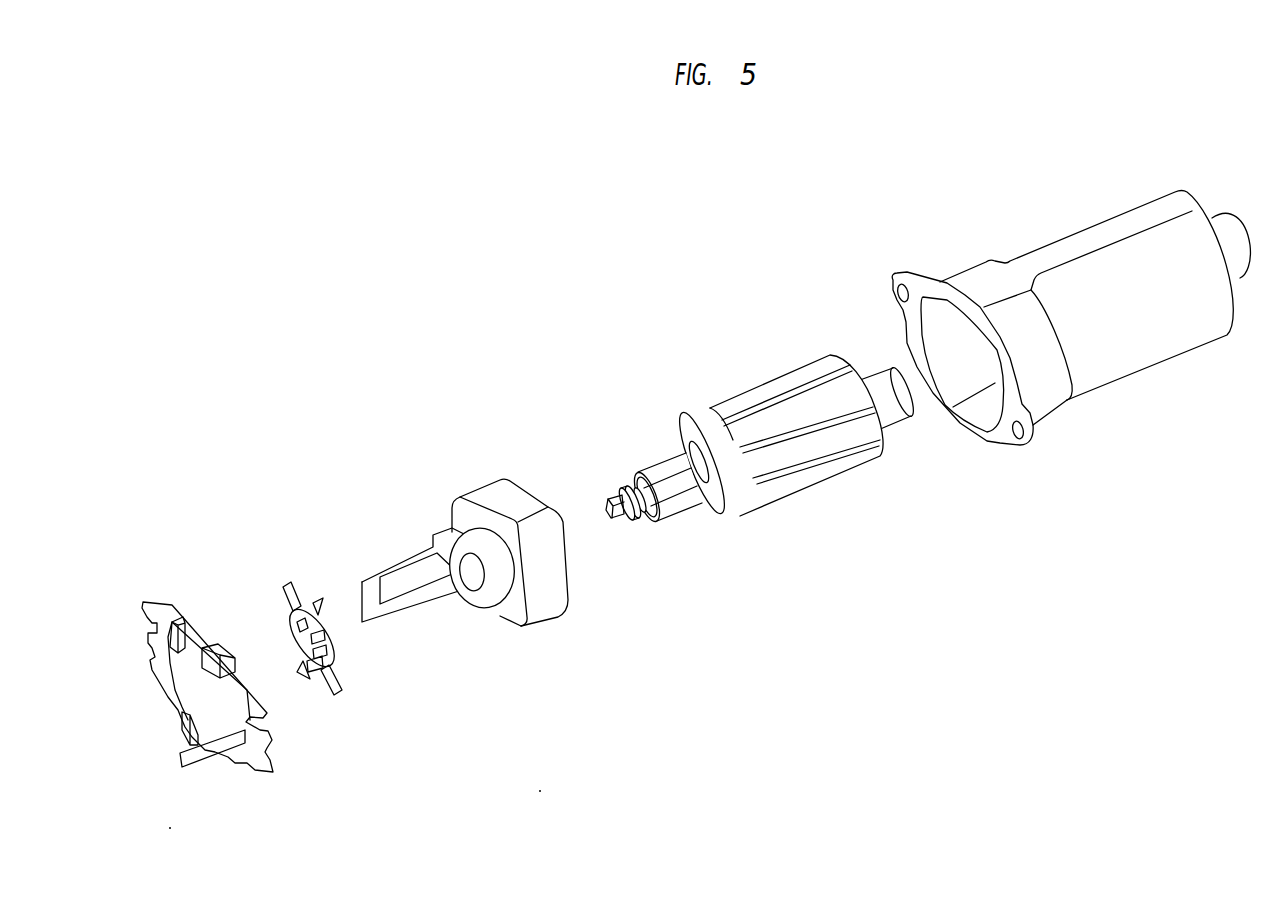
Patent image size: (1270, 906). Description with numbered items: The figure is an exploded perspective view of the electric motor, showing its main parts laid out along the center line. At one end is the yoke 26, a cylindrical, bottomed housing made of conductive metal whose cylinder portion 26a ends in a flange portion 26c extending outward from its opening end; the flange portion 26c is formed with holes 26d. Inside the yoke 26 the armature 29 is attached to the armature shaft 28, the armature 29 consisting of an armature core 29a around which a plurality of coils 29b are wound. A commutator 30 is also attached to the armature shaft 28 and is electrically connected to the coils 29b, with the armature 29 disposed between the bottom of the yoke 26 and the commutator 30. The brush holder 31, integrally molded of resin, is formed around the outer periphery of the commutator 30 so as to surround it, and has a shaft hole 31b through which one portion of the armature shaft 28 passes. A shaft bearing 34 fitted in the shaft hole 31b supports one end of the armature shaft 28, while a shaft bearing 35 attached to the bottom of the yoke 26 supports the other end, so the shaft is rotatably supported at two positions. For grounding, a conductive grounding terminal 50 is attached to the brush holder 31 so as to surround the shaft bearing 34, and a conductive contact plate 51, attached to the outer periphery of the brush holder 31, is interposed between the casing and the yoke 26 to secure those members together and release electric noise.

The yoke 26 is at (1140, 381).
The cylinder portion 26a is at (1088, 242).
The flange portion 26c is at (923, 282).
The holes 26d is at (895, 288).
The armature shaft 28 is at (617, 522).
The armature 29 is at (786, 428).
The armature core 29a is at (782, 392).
The coils 29b is at (695, 423).
The commutator 30 is at (689, 508).
The brush holder 31 is at (553, 600).
The shaft hole 31b is at (470, 582).
The shaft bearing 34 is at (624, 488).
The shaft bearing 35 is at (903, 400).
The grounding terminal 50 is at (312, 558).
The contact plate 51 is at (218, 605).